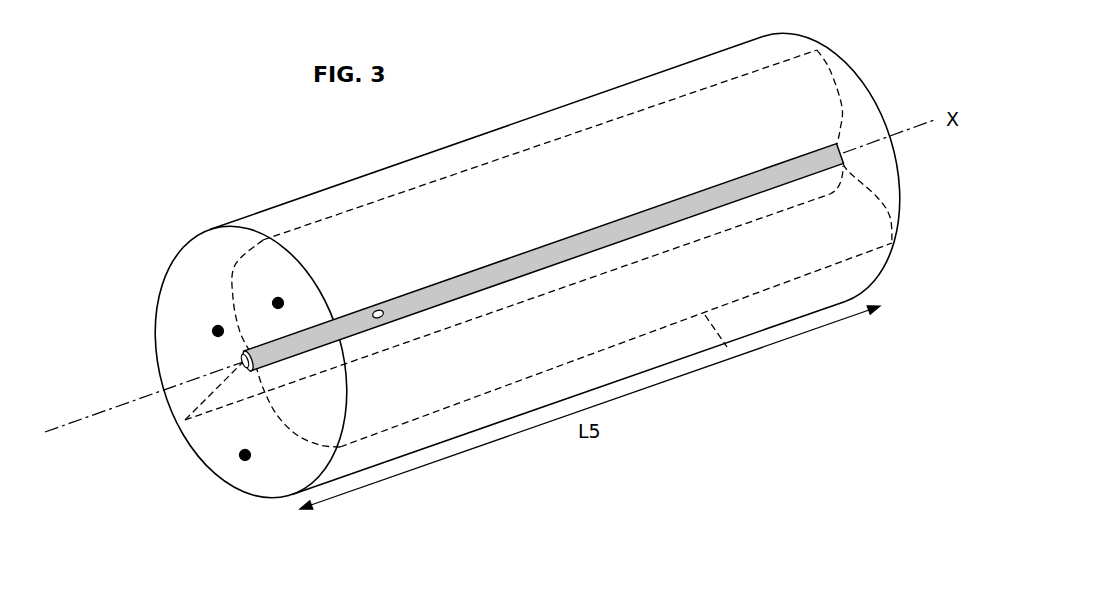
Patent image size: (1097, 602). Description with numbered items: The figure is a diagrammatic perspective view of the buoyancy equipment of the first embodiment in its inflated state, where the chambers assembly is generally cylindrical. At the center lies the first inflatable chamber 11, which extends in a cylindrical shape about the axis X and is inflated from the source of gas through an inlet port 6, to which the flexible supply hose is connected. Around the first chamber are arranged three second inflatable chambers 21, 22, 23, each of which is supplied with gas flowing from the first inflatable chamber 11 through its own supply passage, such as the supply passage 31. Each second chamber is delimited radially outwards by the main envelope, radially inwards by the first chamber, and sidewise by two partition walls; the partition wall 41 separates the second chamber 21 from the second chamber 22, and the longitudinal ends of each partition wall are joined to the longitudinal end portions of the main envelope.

The first inflatable chamber 11 is at (516, 255).
The inlet port 6 is at (243, 362).
The supply passage 31 is at (376, 311).
The second inflatable chamber 21 is at (280, 299).
The second inflatable chamber 22 is at (240, 455).
The second inflatable chamber 23 is at (213, 331).
The partition wall 41 is at (729, 352).